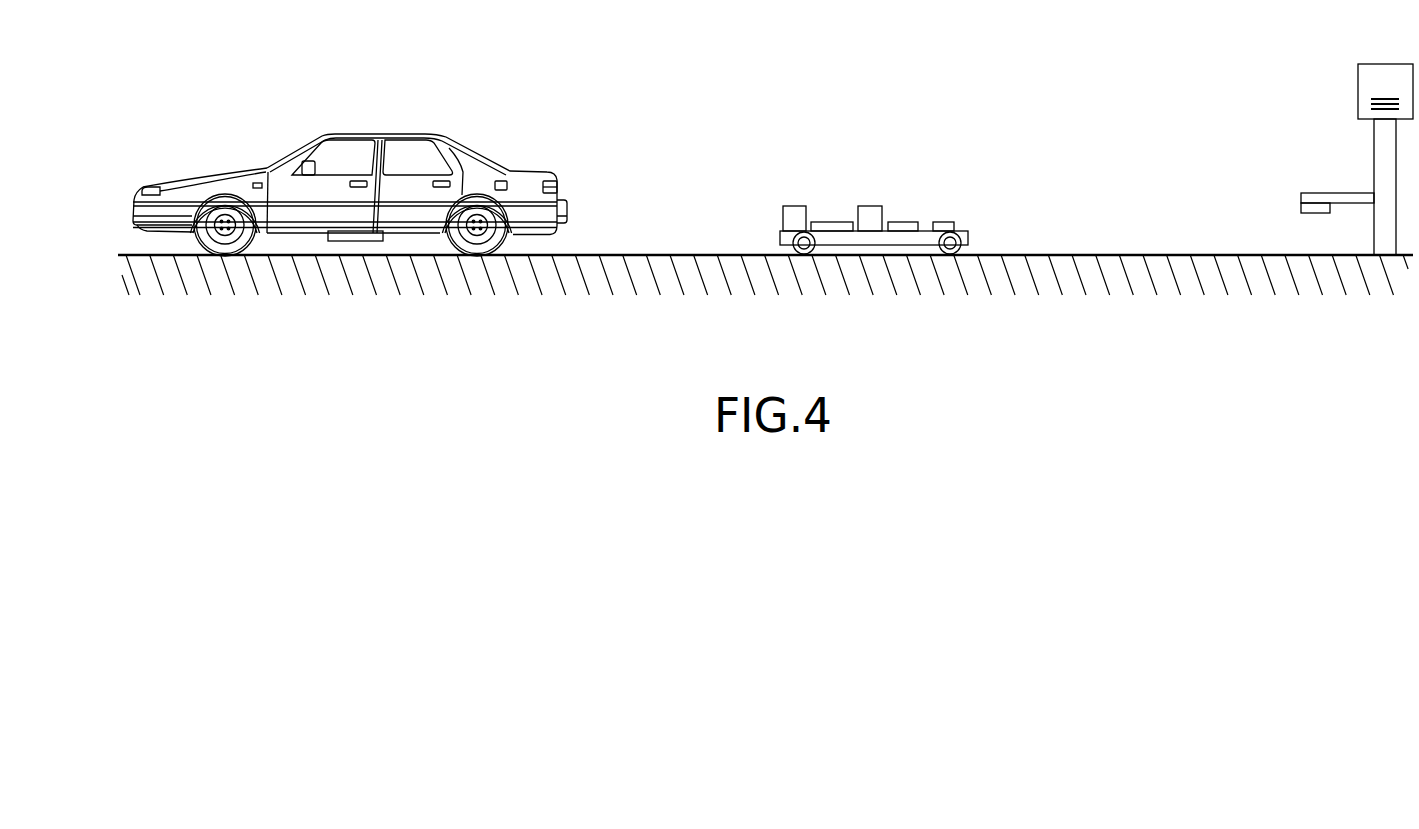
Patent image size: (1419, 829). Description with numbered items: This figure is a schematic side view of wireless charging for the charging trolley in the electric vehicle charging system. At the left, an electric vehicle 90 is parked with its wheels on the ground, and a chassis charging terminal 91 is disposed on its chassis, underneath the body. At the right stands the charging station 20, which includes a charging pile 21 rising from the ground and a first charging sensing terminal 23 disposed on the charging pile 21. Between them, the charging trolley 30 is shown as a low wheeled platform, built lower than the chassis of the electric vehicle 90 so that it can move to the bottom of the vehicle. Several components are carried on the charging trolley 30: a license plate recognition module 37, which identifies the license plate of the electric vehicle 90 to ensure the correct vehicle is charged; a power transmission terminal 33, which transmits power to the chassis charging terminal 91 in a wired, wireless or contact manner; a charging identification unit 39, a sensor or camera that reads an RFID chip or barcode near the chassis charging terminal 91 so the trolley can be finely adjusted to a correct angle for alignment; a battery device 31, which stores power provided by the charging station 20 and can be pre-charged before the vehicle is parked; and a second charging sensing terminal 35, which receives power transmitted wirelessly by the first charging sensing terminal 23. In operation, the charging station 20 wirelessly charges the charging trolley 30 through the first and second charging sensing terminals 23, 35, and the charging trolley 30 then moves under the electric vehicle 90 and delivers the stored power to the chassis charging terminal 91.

The charging station 20 is at (1320, 86).
The charging pile 21 is at (1382, 162).
The first charging sensing terminal 23 is at (1313, 209).
The charging trolley 30 is at (779, 164).
The battery device 31 is at (903, 227).
The power transmission terminal 33 is at (837, 227).
The second charging sensing terminal 35 is at (947, 227).
The license plate recognition module 37 is at (783, 218).
The charging identification unit 39 is at (870, 217).
The electric vehicle 90 is at (223, 183).
The chassis charging terminal 91 is at (356, 238).